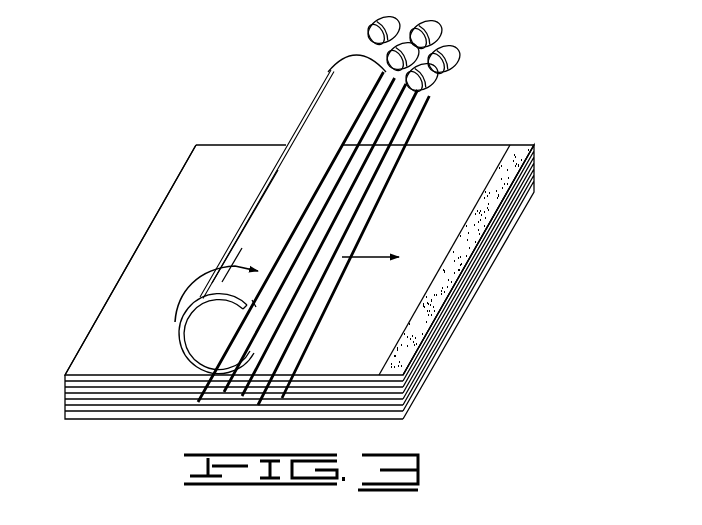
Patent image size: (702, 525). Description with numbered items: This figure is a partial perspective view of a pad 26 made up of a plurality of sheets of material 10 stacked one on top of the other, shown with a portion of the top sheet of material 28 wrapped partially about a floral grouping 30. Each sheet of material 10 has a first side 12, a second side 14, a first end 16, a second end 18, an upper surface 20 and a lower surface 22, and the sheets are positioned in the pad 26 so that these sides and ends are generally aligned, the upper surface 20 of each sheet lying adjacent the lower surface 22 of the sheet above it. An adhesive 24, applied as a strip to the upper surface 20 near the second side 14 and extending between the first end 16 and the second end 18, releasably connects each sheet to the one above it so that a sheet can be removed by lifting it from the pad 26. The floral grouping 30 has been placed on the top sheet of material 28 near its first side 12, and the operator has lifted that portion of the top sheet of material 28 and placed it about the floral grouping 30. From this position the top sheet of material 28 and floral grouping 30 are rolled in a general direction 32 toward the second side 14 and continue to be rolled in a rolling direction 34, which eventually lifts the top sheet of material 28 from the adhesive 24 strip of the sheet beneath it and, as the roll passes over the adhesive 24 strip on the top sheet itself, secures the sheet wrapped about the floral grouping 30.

The sheet of material 10 is at (326, 272).
The first side 12 is at (320, 190).
The second side 14 is at (474, 247).
The first end 16 is at (503, 142).
The second end 18 is at (116, 379).
The upper surface 20 is at (426, 155).
The lower surface 22 is at (282, 211).
The adhesive 24 is at (501, 188).
The pad 26 is at (162, 202).
The top sheet of material 28 is at (308, 123).
The floral grouping 30 is at (445, 24).
The direction 32 is at (358, 253).
The rolling direction 34 is at (188, 290).